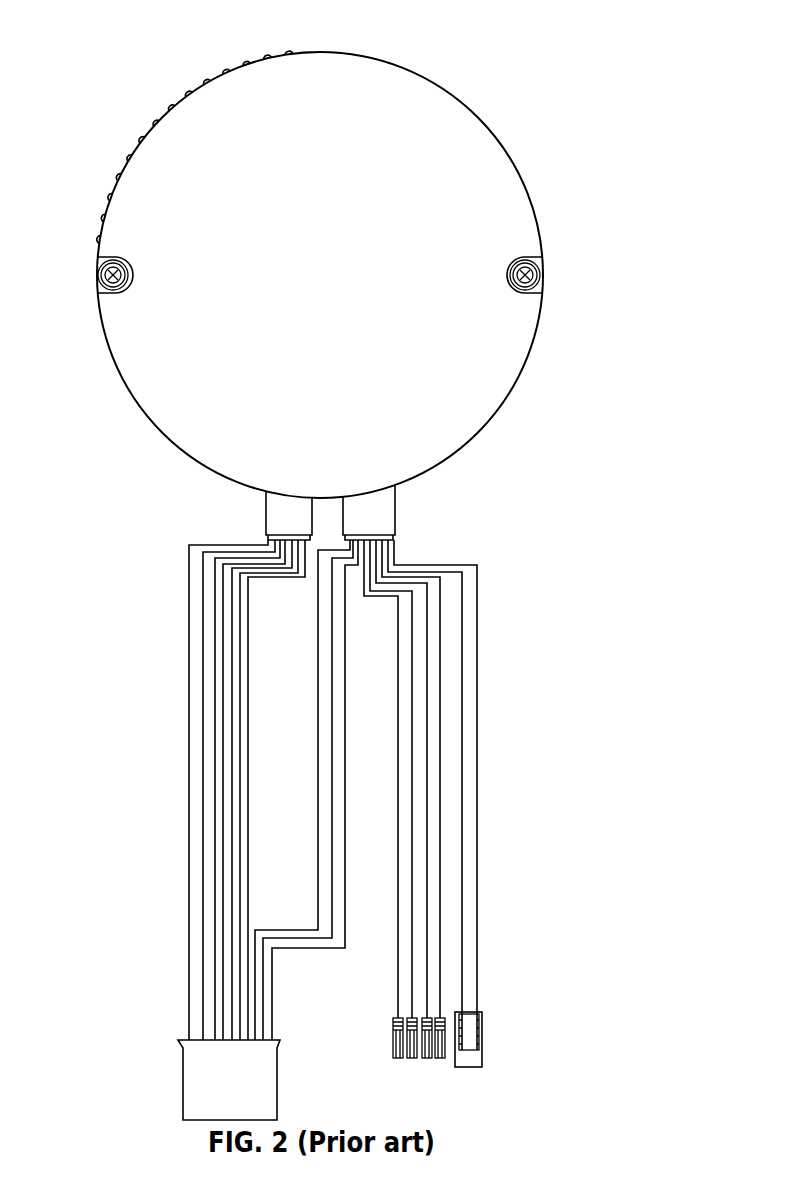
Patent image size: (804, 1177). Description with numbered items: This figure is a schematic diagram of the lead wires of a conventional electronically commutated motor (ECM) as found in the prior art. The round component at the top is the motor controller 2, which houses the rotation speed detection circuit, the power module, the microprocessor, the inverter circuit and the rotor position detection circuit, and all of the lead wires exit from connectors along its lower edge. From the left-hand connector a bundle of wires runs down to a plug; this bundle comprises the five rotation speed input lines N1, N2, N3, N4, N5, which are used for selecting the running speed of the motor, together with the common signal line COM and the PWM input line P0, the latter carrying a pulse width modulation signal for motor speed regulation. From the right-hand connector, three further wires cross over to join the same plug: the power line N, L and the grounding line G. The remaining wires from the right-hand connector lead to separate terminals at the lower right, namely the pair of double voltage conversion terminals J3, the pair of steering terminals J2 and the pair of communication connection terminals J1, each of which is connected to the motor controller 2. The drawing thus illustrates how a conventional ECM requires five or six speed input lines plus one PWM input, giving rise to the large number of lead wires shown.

The motor controller 2 is at (338, 182).
The PWM input line P0 is at (189, 786).
The common signal line COM is at (203, 1023).
The rotation speed input line N1 is at (215, 992).
The rotation speed input line N2 is at (223, 953).
The rotation speed input line N3 is at (232, 918).
The rotation speed input line N4 is at (240, 881).
The rotation speed input line N5 is at (248, 855).
The power line N is at (257, 962).
The grounding line G is at (265, 997).
The power line L is at (273, 1027).
The double voltage conversion terminals J3 is at (412, 1058).
The steering terminals J2 is at (440, 1058).
The communication connection terminals J1 is at (468, 1055).